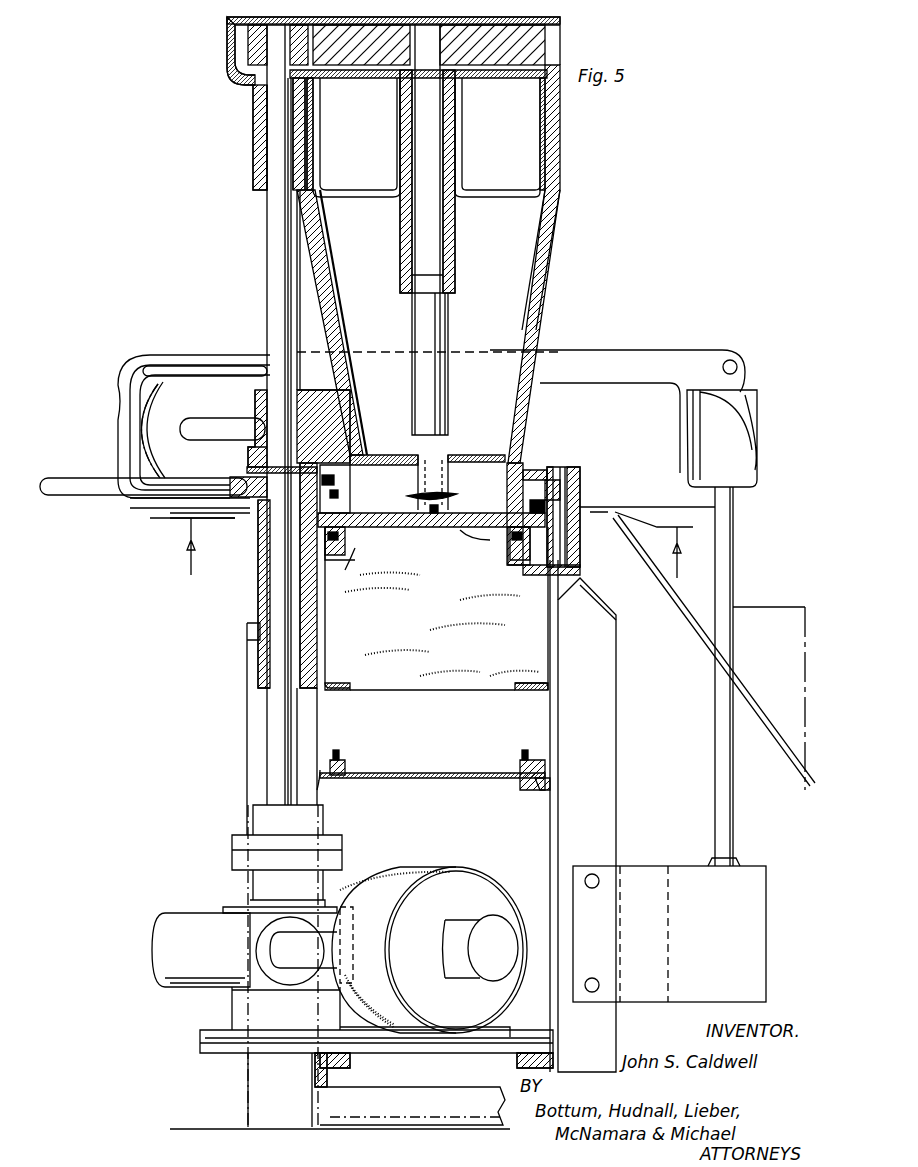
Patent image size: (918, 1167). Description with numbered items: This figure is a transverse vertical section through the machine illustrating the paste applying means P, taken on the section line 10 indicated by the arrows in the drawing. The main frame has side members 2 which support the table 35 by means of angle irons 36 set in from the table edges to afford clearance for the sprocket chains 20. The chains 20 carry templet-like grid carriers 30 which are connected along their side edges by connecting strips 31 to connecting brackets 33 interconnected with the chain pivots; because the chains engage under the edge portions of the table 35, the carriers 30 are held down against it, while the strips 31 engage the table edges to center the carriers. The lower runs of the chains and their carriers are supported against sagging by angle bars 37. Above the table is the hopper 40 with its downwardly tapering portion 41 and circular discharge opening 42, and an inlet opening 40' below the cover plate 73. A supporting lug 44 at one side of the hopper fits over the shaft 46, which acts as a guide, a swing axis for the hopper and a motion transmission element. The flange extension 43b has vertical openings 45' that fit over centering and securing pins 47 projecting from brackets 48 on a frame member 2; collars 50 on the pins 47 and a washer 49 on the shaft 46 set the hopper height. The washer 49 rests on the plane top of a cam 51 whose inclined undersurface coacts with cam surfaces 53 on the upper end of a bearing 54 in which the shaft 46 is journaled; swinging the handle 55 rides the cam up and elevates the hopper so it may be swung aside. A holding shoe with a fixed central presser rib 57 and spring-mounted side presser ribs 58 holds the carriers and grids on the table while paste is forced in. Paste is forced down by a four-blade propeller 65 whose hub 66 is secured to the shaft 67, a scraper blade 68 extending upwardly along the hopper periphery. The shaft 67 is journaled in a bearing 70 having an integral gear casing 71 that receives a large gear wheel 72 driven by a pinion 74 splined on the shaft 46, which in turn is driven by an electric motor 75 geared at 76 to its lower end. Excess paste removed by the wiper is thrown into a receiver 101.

The side members 2 is at (330, 645).
The section line 10 is at (440, 545).
The sprocket chains 20 is at (343, 556).
The grid carriers 30 is at (456, 527).
The connecting strips 31 is at (548, 510).
The connecting brackets 33 is at (522, 565).
The table 35 is at (470, 527).
The angle irons 36 is at (370, 555).
The angle bars 37 is at (545, 788).
The hopper 40 is at (560, 264).
The inlet opening 40' is at (568, 242).
The downwardly tapering portion 41 is at (545, 278).
The circular discharge opening 42 is at (518, 485).
The flange extension 43b is at (575, 468).
The supporting lug 44 is at (305, 380).
The vertical openings 45' is at (623, 418).
The shaft 46 is at (275, 312).
The centering and securing pins 47 is at (566, 478).
The brackets 48 is at (580, 520).
The spacing washer 49 is at (247, 470).
The spacing collars 50 is at (580, 498).
The cam 51 is at (255, 500).
The cam surfaces 53 is at (275, 565).
The bearing 54 is at (250, 622).
The handle 55 is at (102, 492).
The central presser rib 57 is at (434, 512).
The side presser ribs 58 is at (352, 513).
The four-blade propeller 65 is at (445, 482).
The hub 66 is at (418, 440).
The shaft 67 is at (444, 340).
The scraper blade 68 is at (348, 338).
The bearing 70 is at (458, 152).
The gear casing 71 is at (548, 62).
The large gear wheel 72 is at (522, 76).
The cover plate 73 is at (352, 75).
The pinion 74 is at (256, 44).
The electric motor 75 is at (395, 880).
The gearing 76 is at (187, 942).
The receiver 101 is at (775, 638).
The paste applying means P is at (350, 207).